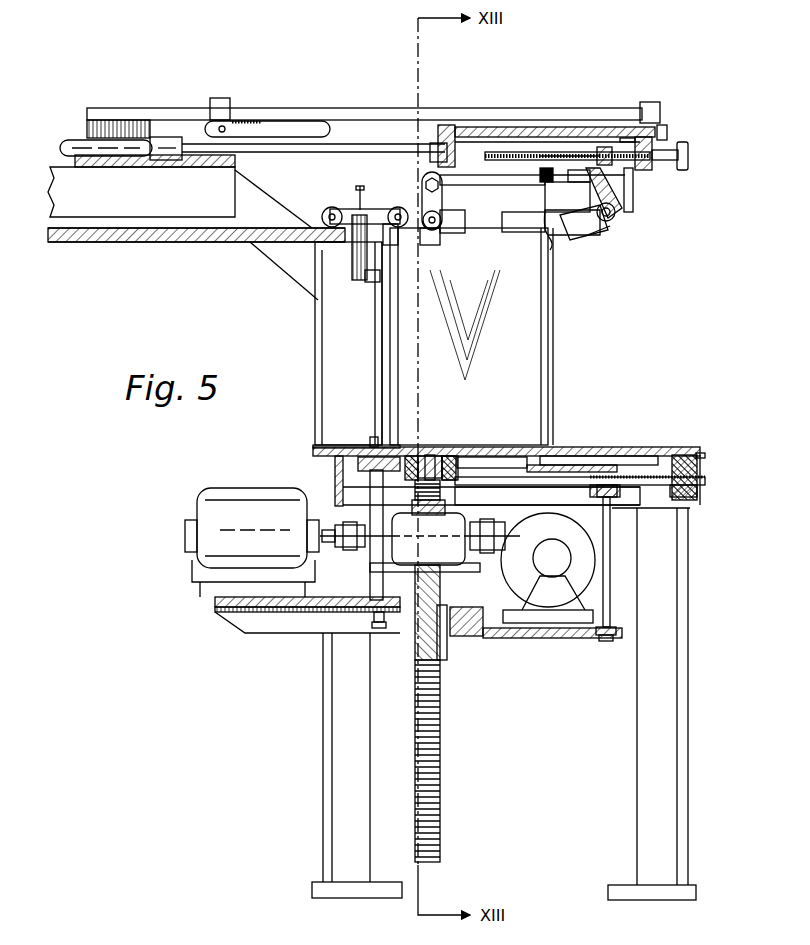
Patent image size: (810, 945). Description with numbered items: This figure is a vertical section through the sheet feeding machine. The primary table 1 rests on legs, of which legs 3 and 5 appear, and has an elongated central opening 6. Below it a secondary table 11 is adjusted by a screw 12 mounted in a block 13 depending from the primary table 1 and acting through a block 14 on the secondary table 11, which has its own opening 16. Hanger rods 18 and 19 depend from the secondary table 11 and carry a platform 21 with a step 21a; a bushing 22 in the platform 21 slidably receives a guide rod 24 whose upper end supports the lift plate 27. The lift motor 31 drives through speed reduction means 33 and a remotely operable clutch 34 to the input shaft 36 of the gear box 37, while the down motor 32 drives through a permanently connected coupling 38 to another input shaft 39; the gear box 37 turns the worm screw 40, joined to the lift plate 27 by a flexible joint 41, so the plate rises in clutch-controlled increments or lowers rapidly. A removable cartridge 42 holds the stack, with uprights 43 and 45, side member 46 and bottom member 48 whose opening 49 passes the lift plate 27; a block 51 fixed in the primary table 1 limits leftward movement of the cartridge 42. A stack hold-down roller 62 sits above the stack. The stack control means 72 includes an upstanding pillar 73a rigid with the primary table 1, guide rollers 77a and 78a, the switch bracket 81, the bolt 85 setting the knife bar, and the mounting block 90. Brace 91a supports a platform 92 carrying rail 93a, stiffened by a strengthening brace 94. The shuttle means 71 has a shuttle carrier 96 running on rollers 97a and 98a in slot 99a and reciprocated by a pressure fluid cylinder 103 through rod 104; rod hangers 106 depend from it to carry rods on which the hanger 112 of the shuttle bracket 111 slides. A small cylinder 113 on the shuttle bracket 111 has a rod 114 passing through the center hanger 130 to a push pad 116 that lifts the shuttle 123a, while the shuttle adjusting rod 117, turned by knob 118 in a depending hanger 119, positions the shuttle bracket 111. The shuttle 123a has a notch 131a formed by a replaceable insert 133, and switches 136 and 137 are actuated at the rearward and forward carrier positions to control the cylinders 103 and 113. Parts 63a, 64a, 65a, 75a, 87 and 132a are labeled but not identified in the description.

The primary table 1 is at (572, 447).
The leg 3 is at (650, 660).
The leg 5 is at (333, 727).
The elongated central opening 6 is at (520, 457).
The secondary table 11 is at (548, 484).
The screw 12 is at (690, 500).
The block 13 is at (350, 335).
The block 14 is at (612, 498).
The opening 16 is at (456, 460).
The hanger rod 18 is at (611, 582).
The hanger rod 19 is at (372, 490).
The platform 21 is at (565, 640).
The step 21a is at (468, 636).
The bushing 22 is at (446, 650).
The guide rod 24 is at (412, 492).
The lift plate 27 is at (438, 455).
The lift motor 31 is at (593, 589).
The down motor 32 is at (207, 495).
The speed reduction means 33 is at (528, 490).
The remotely operable clutch 34 is at (482, 522).
The input shaft 36 is at (440, 550).
The gear box 37 is at (440, 513).
The coupling 38 is at (336, 546).
The input shaft 39 is at (366, 528).
The worm screw 40 is at (442, 758).
The flexible joint 41 is at (432, 455).
The cartridge 42 is at (556, 360).
The upright 43 is at (556, 385).
The upright 45 is at (372, 398).
The side member 46 is at (553, 320).
The bottom member 48 is at (527, 462).
The opening 49 is at (415, 455).
The block 51 is at (374, 437).
The stack hold-down roller 62 is at (432, 232).
The block 63a is at (465, 220).
The link 64a is at (421, 178).
The rod 65a is at (540, 175).
The shuttle means 71 is at (606, 236).
The stack control means 72 is at (345, 250).
The upstanding pillar 73a is at (316, 342).
The guide 75a is at (394, 230).
The guide roller 77a is at (424, 215).
The guide roller 78a is at (325, 208).
The switch bracket 81 is at (392, 208).
The bolt 85 is at (360, 186).
The bar 87 is at (350, 209).
The mounting block 90 is at (372, 280).
The brace 91a is at (285, 258).
The platform 92 is at (72, 160).
The rail 93a is at (180, 110).
The strengthening brace 94 is at (668, 128).
The shuttle carrier 96 is at (526, 126).
The roller 97a is at (444, 124).
The roller 98a is at (630, 127).
The slot 99a is at (352, 119).
The pressure fluid actuated cylinder 103 is at (78, 139).
The rod 104 is at (270, 150).
The rod hanger 106 is at (450, 160).
The shuttle bracket 111 is at (578, 153).
The upstanding hanger 112 is at (567, 147).
The small pressure cylinder 113 is at (545, 195).
The rod 114 is at (592, 190).
The push pad 116 is at (633, 205).
The shuttle adjusting rod 117 is at (605, 147).
The knob 118 is at (683, 170).
The depending hanger 119 is at (645, 172).
The shuttle 123a is at (597, 240).
The center hanger 130 is at (614, 222).
The notch 131a is at (552, 240).
The block 132a is at (523, 222).
The replaceable insert 133 is at (568, 235).
The switch 136 is at (660, 108).
The micro switch 137 is at (221, 99).